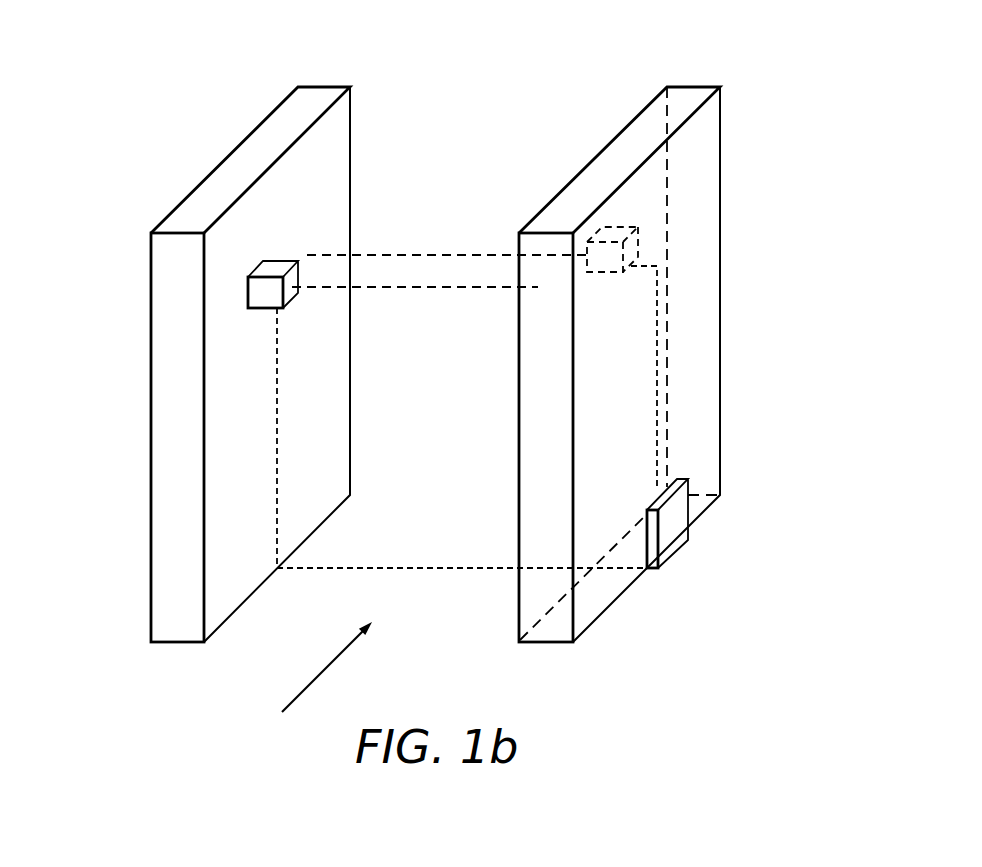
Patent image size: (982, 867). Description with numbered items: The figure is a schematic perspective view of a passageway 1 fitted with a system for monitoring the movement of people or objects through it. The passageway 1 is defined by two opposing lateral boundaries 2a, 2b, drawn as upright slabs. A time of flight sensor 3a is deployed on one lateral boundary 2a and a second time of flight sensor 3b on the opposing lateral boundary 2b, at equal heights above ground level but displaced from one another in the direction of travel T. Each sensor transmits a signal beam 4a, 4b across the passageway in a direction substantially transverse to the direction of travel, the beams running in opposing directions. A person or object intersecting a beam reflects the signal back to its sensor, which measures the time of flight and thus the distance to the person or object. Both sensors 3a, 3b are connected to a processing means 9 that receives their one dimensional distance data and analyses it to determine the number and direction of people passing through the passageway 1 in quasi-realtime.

The passageway 1 is at (431, 72).
The lateral boundary 2a is at (151, 252).
The lateral boundary 2b is at (721, 100).
The time of flight sensor 3a is at (262, 311).
The time of flight sensor 3b is at (598, 276).
The signal beam 4a is at (425, 290).
The signal beam 4b is at (437, 253).
The processing means 9 is at (677, 543).